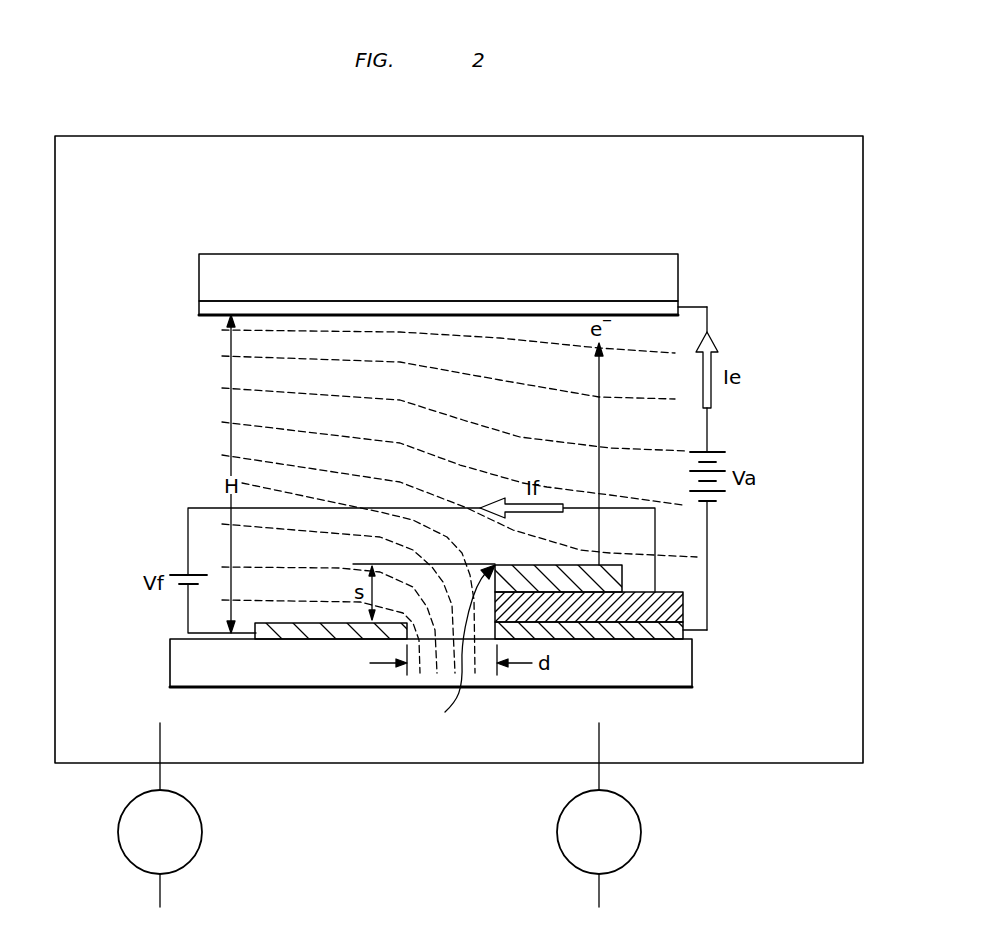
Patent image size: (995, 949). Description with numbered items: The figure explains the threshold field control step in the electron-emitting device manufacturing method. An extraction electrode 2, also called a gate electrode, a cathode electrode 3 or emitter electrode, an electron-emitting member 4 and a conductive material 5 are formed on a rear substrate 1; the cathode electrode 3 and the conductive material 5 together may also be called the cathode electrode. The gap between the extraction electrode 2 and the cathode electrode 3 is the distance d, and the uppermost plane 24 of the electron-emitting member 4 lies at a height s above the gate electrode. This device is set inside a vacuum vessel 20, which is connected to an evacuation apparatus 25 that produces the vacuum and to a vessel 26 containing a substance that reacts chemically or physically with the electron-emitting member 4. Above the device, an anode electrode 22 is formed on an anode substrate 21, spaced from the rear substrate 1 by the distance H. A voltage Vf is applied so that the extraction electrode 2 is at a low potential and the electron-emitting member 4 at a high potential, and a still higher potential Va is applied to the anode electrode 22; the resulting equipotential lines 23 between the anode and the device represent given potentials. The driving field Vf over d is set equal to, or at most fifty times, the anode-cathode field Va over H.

The rear substrate 1 is at (660, 677).
The extraction electrode 2 is at (304, 632).
The cathode electrode 3 is at (690, 622).
The electron-emitting member 4 is at (615, 572).
The conductive material 5 is at (683, 603).
The vacuum vessel 20 is at (475, 763).
The anode substrate 21 is at (208, 275).
The anode electrode 22 is at (216, 307).
The equipotential lines 23 is at (356, 432).
The uppermost plane of the electron-emitting member 24 is at (458, 651).
The evacuation apparatus 25 is at (190, 836).
The vessel 26 is at (629, 840).